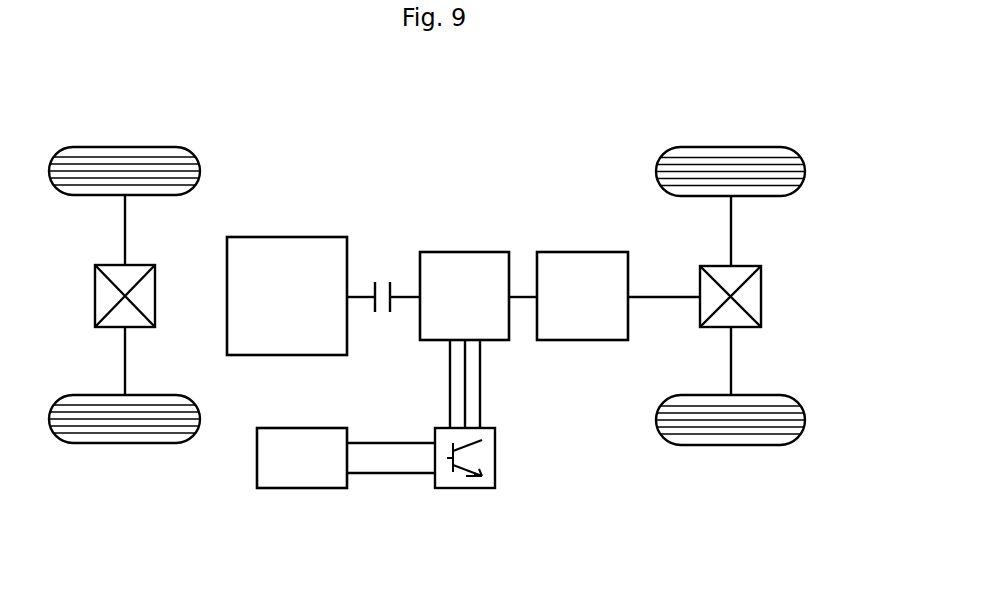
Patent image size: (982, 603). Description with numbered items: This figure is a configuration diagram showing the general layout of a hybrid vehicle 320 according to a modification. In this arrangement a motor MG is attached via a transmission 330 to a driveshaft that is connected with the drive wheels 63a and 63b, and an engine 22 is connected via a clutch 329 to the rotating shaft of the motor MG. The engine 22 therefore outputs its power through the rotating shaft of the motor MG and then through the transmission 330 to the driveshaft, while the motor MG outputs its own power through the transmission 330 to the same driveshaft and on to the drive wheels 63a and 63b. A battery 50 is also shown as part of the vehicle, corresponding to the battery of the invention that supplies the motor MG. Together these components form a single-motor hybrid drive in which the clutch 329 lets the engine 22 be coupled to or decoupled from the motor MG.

The hybrid vehicle 320 is at (540, 103).
The engine 22 is at (287, 237).
The clutch 329 is at (383, 280).
The motor MG is at (465, 252).
The transmission 330 is at (583, 252).
The battery 50 is at (302, 428).
The drive wheel 63a is at (731, 147).
The drive wheel 63b is at (731, 445).